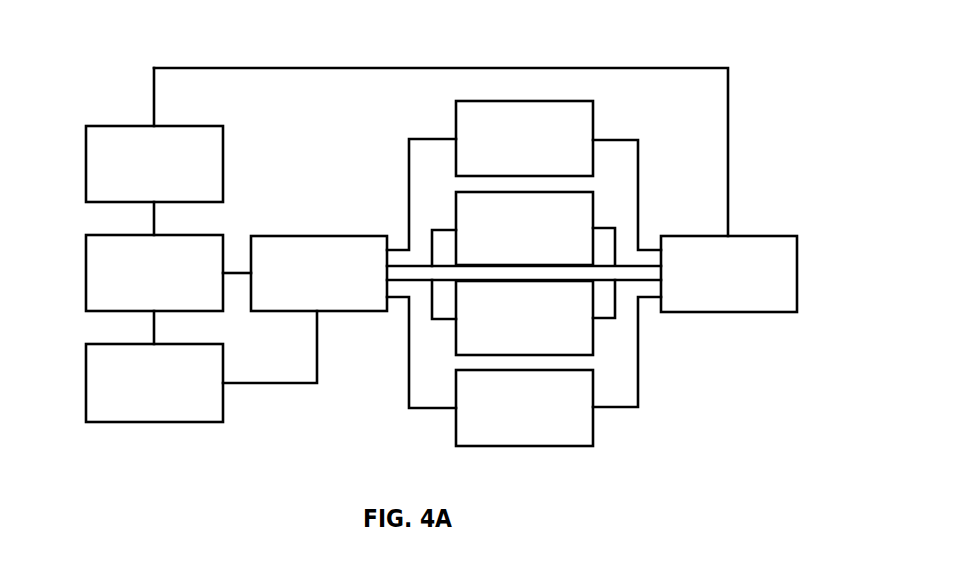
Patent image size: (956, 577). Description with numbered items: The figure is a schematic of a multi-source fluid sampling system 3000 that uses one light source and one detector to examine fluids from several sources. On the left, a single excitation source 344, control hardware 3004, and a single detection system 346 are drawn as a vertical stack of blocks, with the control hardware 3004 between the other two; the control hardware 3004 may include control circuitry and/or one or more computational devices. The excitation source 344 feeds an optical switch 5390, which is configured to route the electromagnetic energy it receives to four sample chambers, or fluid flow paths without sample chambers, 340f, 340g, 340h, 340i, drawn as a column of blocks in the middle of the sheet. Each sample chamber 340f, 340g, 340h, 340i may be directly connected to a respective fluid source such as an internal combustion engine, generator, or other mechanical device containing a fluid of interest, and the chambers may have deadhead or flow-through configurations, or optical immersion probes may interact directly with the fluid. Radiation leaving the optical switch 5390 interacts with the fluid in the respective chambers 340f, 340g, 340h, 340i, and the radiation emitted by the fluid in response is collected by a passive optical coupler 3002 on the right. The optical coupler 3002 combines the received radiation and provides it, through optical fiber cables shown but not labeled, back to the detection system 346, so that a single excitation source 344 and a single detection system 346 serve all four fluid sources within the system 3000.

The multi-source fluid sampling system 3000 is at (684, 31).
The passive optical coupler 3002 is at (797, 273).
The control hardware 3004 is at (86, 273).
The detection system 346 is at (86, 163).
The excitation source 344 is at (86, 383).
The optical switch 5390 is at (319, 236).
The sample chamber 340i is at (593, 120).
The sample chamber 340h is at (593, 208).
The sample chamber 340g is at (593, 338).
The sample chamber 340f is at (593, 428).